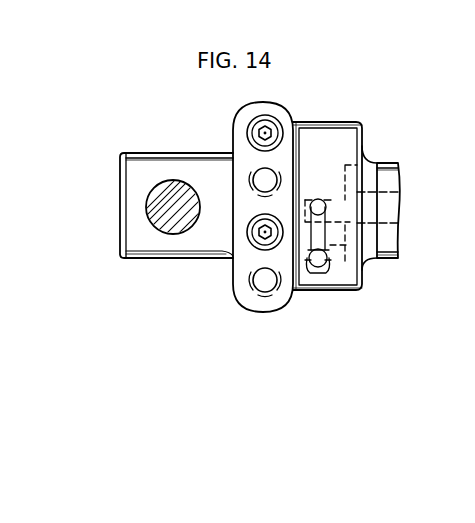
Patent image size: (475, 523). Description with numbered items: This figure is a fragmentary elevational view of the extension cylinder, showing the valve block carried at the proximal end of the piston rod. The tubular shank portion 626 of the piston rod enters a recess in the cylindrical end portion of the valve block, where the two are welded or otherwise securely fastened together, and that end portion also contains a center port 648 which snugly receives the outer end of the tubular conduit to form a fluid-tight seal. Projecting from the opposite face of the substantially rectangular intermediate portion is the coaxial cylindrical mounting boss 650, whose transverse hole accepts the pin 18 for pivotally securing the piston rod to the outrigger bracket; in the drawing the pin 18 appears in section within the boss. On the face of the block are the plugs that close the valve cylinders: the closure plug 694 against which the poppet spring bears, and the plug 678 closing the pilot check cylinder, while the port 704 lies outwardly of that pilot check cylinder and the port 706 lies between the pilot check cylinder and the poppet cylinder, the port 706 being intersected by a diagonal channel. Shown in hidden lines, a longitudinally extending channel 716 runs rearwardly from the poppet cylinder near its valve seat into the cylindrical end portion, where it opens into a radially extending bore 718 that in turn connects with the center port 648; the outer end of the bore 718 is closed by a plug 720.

The pin 18 is at (172, 195).
The tubular shank portion 626 is at (390, 260).
The center port 648 is at (310, 195).
The cylindrical mounting boss 650 is at (122, 215).
The plug 678 is at (252, 243).
The closure plug 694 is at (270, 117).
The port 704 is at (262, 292).
The port 706 is at (270, 173).
The longitudinally extending channel 716 is at (288, 296).
The radially extending bore 718 is at (348, 282).
The plug 720 is at (322, 238).